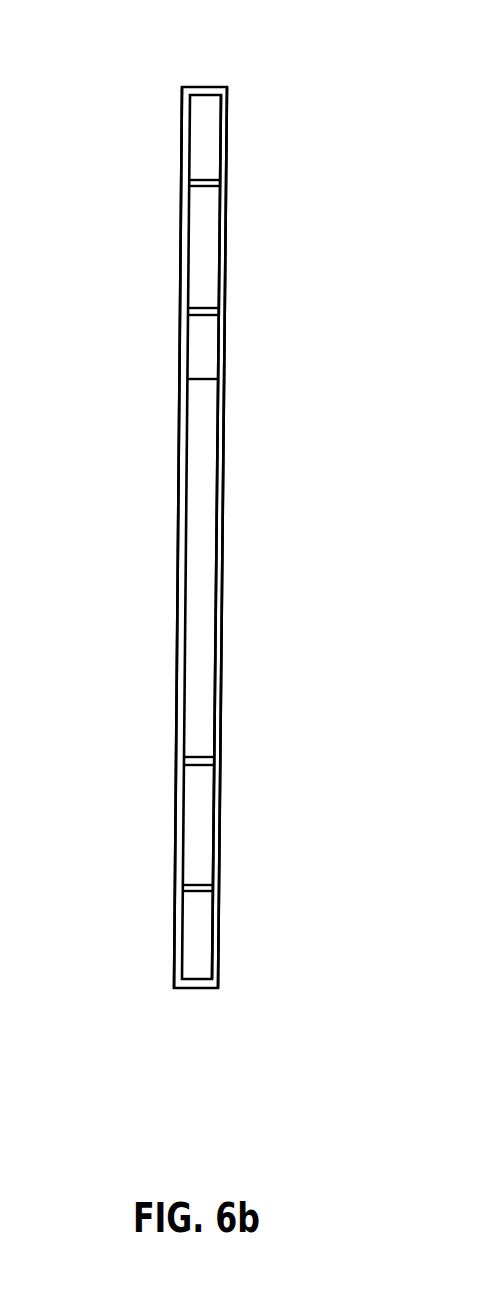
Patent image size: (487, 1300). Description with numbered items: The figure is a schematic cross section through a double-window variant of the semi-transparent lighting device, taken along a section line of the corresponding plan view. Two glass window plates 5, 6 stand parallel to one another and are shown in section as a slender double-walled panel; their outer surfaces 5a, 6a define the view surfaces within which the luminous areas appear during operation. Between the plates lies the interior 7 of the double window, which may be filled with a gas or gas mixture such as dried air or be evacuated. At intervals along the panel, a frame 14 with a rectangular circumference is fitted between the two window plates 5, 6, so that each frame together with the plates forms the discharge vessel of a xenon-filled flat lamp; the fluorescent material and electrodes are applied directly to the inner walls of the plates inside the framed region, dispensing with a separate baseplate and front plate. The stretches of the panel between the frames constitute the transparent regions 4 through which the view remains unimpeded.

The transparent region 4 is at (220, 683).
The glass plate 5 is at (218, 379).
The outer surface 5a is at (160, 548).
The glass plate 6 is at (222, 463).
The outer surface 6a is at (237, 516).
The interior 7 is at (193, 573).
The frame 14 is at (222, 172).